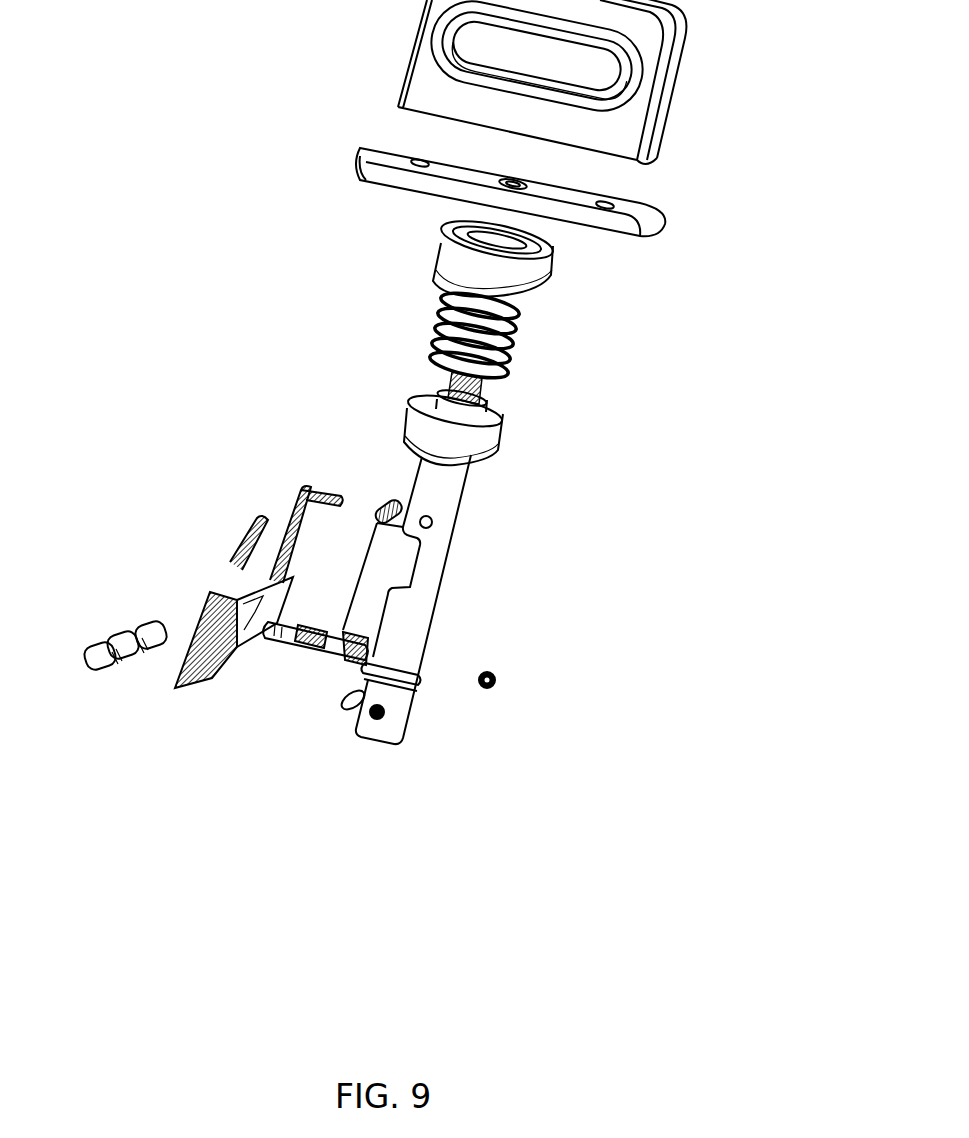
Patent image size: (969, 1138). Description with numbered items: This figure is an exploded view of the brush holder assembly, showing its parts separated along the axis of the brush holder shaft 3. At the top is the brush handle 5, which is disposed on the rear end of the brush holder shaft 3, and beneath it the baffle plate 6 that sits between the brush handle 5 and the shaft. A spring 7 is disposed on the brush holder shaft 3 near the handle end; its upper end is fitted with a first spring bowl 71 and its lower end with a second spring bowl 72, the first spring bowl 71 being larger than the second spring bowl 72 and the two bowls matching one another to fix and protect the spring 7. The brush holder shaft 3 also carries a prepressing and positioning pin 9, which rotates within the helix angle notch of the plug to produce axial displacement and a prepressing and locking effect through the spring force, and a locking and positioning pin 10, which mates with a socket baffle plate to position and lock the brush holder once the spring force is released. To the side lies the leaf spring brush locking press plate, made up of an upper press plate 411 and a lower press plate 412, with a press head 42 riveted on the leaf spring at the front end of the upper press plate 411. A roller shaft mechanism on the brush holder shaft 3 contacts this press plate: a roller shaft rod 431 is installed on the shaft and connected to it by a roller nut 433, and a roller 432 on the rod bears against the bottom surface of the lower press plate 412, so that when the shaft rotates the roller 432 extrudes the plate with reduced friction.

The brush holder shaft 3 is at (438, 497).
The brush handle 5 is at (622, 118).
The baffle plate 6 is at (613, 203).
The spring 7 is at (443, 340).
The first spring bowl 71 is at (480, 265).
The second spring bowl 72 is at (423, 427).
The prepressing and positioning pin 9 is at (343, 624).
The locking and positioning pin 10 is at (354, 718).
The upper press plate 411 is at (211, 595).
The lower press plate 412 is at (231, 613).
The press head 42 is at (100, 672).
The roller shaft rod 431 is at (330, 632).
The roller 432 is at (272, 632).
The roller nut 433 is at (497, 677).